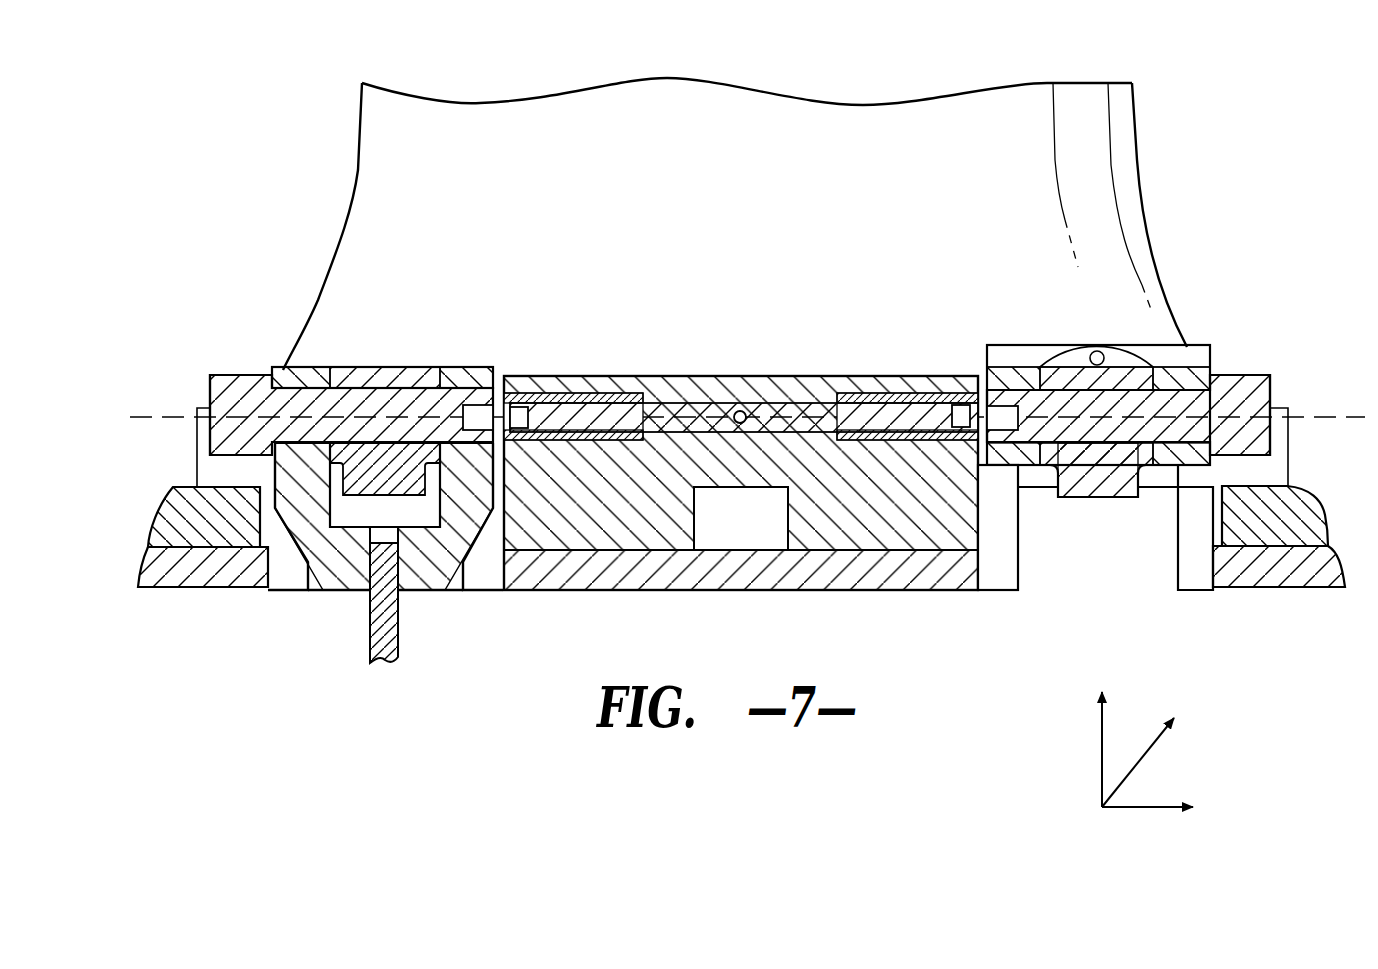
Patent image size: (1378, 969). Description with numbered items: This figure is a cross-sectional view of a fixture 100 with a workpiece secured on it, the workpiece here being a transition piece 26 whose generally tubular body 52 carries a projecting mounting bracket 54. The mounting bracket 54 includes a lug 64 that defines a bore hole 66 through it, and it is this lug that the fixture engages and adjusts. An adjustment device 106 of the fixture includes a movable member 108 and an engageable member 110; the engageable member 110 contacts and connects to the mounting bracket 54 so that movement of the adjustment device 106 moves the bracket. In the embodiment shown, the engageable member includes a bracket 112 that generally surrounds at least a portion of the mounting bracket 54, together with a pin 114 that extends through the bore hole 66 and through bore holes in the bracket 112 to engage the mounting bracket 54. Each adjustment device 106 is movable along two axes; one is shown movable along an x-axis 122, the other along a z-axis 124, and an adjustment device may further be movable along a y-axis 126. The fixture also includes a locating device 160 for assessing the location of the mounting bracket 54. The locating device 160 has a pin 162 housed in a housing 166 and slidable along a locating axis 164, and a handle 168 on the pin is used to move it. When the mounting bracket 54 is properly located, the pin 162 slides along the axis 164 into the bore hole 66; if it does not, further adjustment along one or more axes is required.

The transition piece 26 is at (303, 162).
The tubular body 52 is at (1095, 174).
The mounting bracket 54 is at (384, 348).
The lug 64 is at (343, 377).
The bore hole 66 is at (400, 377).
The fixture 100 is at (1268, 336).
The adjustment device 106 is at (354, 606).
The movable member 108 is at (405, 618).
The engageable member 110 is at (326, 553).
The bracket 112 is at (308, 373).
The pin 114 is at (260, 380).
The x-axis 122 is at (1143, 750).
The z-axis 124 is at (1100, 740).
The y-axis 126 is at (1147, 808).
The locating device 160 is at (578, 522).
The pin 162 is at (663, 395).
The locating axis 164 is at (163, 413).
The housing 166 is at (883, 387).
The handle 168 is at (740, 410).